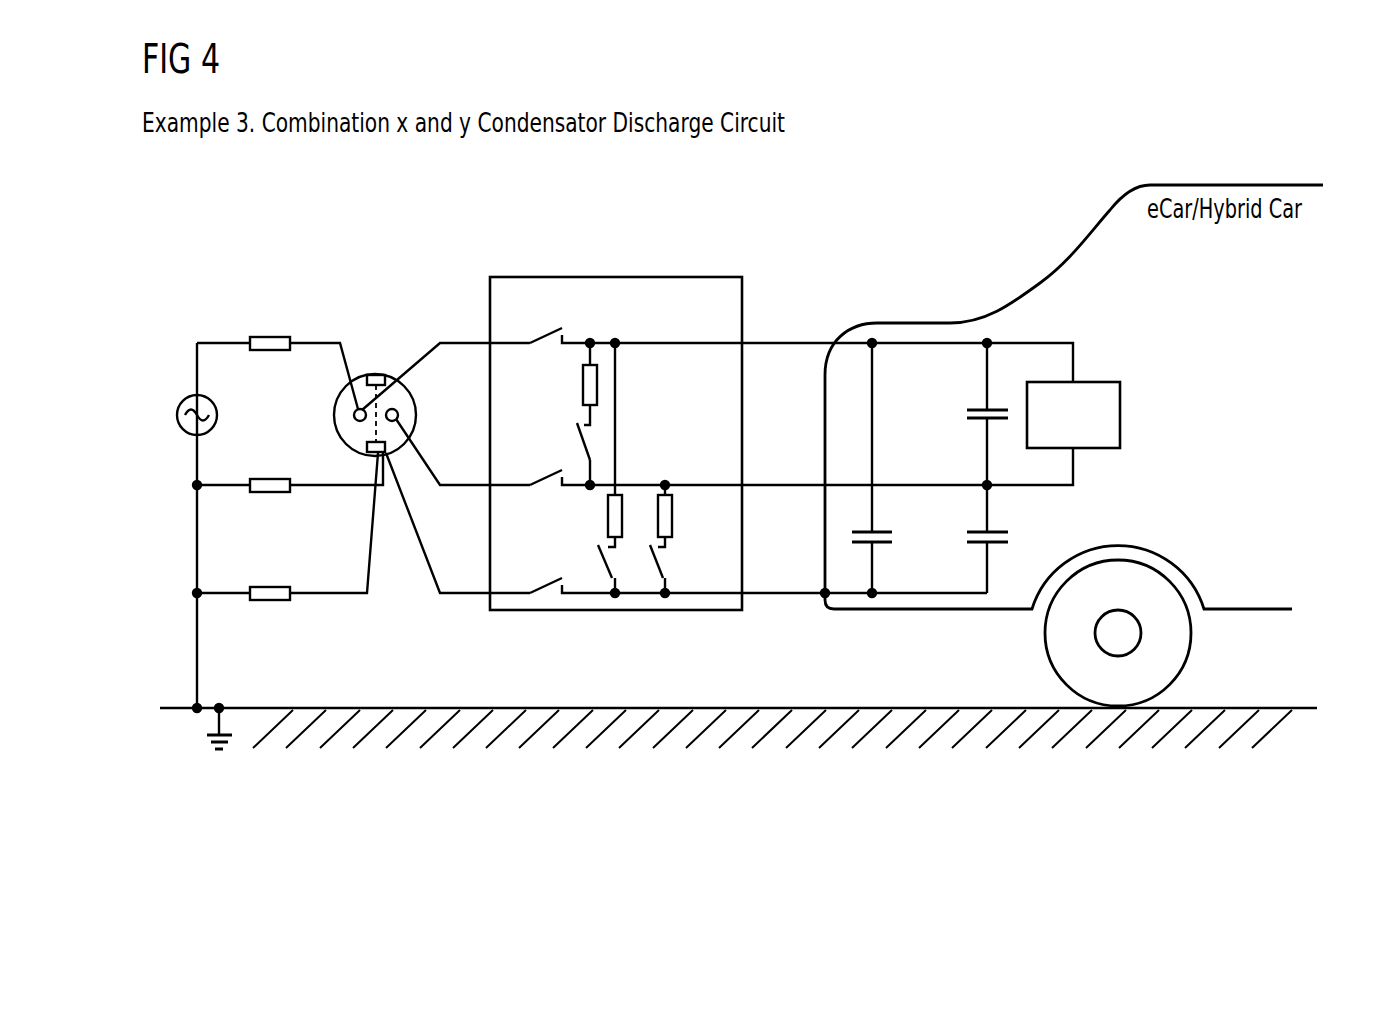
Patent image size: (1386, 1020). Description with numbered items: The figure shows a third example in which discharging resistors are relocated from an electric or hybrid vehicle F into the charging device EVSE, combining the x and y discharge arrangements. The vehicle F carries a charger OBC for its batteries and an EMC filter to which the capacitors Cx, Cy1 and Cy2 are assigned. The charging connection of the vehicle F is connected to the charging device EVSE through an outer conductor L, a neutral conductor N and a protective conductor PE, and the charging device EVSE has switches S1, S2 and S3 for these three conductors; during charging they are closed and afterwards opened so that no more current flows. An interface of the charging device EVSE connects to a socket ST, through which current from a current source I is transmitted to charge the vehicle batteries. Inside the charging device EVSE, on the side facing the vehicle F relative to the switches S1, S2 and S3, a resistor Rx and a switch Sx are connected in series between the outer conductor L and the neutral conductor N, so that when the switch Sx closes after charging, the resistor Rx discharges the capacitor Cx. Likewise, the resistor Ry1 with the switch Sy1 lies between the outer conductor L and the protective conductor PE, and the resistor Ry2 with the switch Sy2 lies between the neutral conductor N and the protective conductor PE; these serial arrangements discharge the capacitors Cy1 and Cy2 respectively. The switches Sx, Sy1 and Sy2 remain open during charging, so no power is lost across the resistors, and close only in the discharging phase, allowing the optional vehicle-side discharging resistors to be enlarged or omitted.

The current source I is at (177, 415).
The outer conductor L is at (635, 377).
The neutral conductor N is at (633, 445).
The protective conductor PE is at (590, 473).
The socket ST is at (362, 378).
The charging device EVSE is at (610, 276).
The switch S1 is at (547, 335).
The switch S2 is at (544, 477).
The switch S3 is at (544, 588).
The resistor Rx is at (581, 385).
The switch Sx is at (579, 439).
The resistor Ry1 is at (608, 518).
The resistor Ry2 is at (672, 516).
The switch Sy1 is at (598, 560).
The switch Sy2 is at (664, 560).
The electric vehicle F is at (1066, 262).
The capacitor Cx is at (1008, 410).
The capacitor Cy1 is at (852, 537).
The capacitor Cy2 is at (1007, 537).
The charger OBC is at (1073, 415).